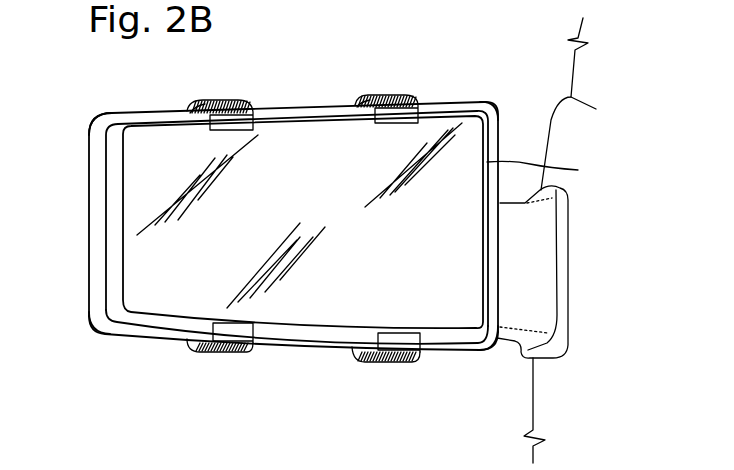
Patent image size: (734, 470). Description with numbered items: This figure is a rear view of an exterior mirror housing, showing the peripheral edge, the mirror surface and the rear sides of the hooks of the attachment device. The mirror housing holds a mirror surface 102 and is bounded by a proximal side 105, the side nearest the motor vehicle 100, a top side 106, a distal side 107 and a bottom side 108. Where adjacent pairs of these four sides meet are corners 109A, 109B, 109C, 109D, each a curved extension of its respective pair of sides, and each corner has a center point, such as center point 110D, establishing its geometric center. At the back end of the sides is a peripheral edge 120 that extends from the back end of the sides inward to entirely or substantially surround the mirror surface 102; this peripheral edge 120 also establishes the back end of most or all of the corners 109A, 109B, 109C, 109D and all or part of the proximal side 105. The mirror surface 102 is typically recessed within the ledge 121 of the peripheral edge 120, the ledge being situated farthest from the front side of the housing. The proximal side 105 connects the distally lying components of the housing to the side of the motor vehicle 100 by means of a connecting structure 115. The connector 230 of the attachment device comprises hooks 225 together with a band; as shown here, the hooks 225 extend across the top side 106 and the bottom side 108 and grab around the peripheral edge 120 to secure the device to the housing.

The motor vehicle 100 is at (525, 398).
The mirror surface 102 is at (138, 243).
The proximal side 105 is at (500, 115).
The top side 106 is at (298, 108).
The distal side 107 is at (88, 173).
The bottom side 108 is at (147, 340).
The corner 109A is at (496, 101).
The corner 109B is at (111, 113).
The corner 109C is at (95, 331).
The corner 109D is at (481, 348).
The center point 110D is at (394, 61).
The connecting structure 115 is at (497, 340).
The peripheral edge 120 is at (288, 348).
The ledge 121 is at (550, 170).
The hook 225 is at (382, 357).
The connector 230 is at (212, 353).